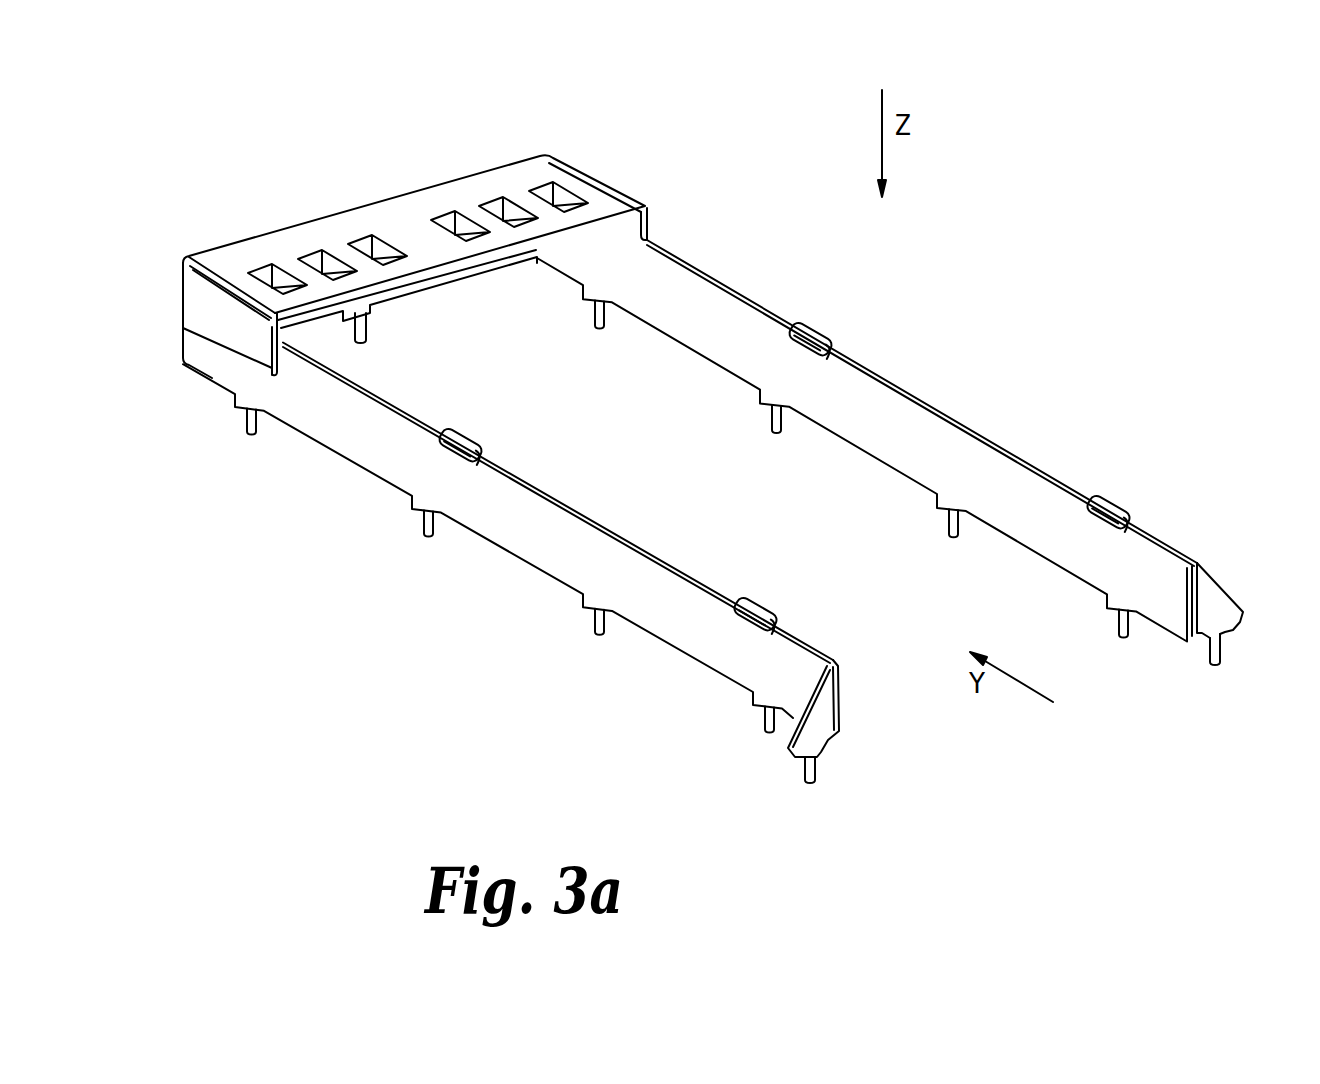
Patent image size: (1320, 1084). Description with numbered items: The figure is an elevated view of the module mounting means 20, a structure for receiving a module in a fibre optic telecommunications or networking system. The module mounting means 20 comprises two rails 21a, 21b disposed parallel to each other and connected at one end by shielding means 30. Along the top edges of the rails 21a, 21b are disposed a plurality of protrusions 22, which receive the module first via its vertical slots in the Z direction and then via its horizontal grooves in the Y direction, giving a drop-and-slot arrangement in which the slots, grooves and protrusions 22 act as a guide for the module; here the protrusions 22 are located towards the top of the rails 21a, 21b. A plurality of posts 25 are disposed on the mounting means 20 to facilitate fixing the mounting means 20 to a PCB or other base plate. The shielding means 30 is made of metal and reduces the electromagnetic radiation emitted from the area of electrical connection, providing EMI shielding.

The module mounting means 20 is at (423, 162).
The shielding means 30 is at (583, 188).
The rail 21a is at (570, 575).
The rail 21b is at (890, 412).
The protrusions 22 is at (458, 437).
The posts 25 is at (247, 431).